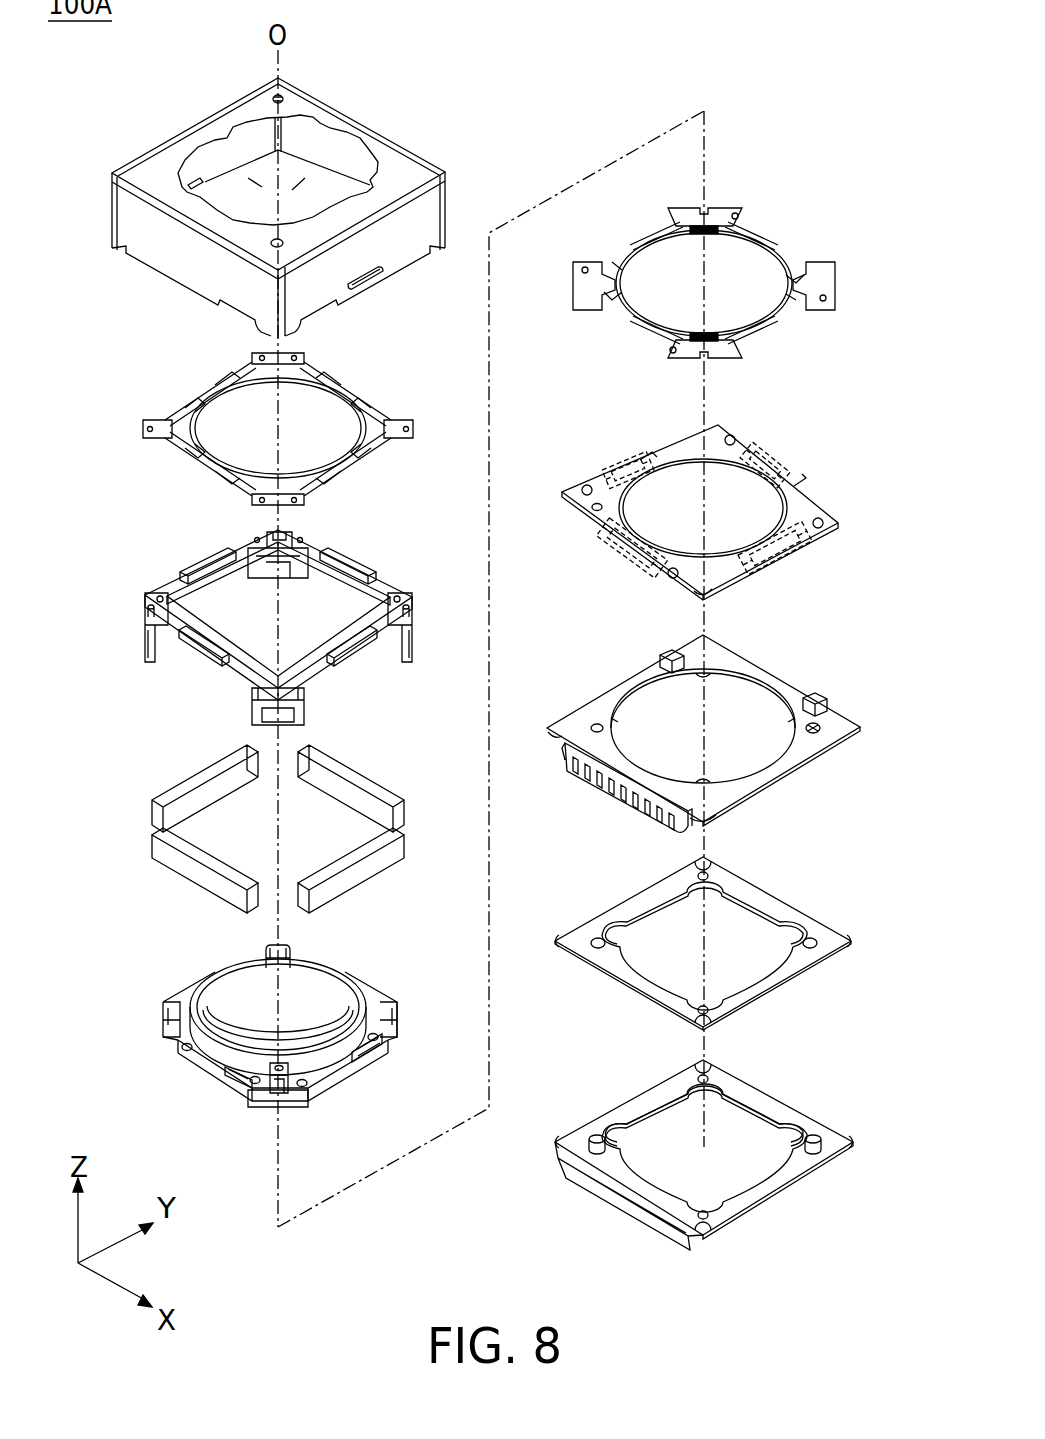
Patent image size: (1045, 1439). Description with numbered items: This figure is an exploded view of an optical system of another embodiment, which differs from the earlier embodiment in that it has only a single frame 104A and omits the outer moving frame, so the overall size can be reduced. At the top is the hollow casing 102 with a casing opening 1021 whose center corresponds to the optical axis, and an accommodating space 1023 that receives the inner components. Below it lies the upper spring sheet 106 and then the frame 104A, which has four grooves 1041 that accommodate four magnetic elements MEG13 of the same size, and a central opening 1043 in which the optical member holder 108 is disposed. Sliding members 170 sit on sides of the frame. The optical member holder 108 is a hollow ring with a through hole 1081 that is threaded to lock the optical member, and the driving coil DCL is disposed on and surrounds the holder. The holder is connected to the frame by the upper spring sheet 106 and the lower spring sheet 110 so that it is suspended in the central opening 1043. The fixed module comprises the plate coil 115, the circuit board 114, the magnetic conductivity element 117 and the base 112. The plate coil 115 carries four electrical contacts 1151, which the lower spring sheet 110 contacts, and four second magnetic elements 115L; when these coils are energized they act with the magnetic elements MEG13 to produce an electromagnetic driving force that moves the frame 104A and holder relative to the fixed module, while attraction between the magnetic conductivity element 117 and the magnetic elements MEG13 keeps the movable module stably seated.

The casing 102 is at (318, 93).
The casing opening 1021 is at (348, 150).
The accommodating space 1023 is at (248, 190).
The upper spring sheet 106 is at (358, 387).
The frame 104A is at (370, 557).
The grooves 1041 is at (220, 592).
The central opening 1043 is at (218, 620).
The sliding members 170 is at (246, 706).
The magnetic elements MEG13 is at (203, 780).
The optical member holder 108 is at (343, 993).
The through hole 1081 is at (218, 995).
The driving coil DCL is at (363, 1067).
The lower spring sheet 110 is at (778, 240).
The plate coil 115 is at (687, 438).
The electrical contacts 1151 is at (733, 439).
The second magnetic elements 115L is at (630, 460).
The circuit board 114 is at (807, 680).
The magnetic conductivity element 117 is at (807, 912).
The base 112 is at (807, 1110).